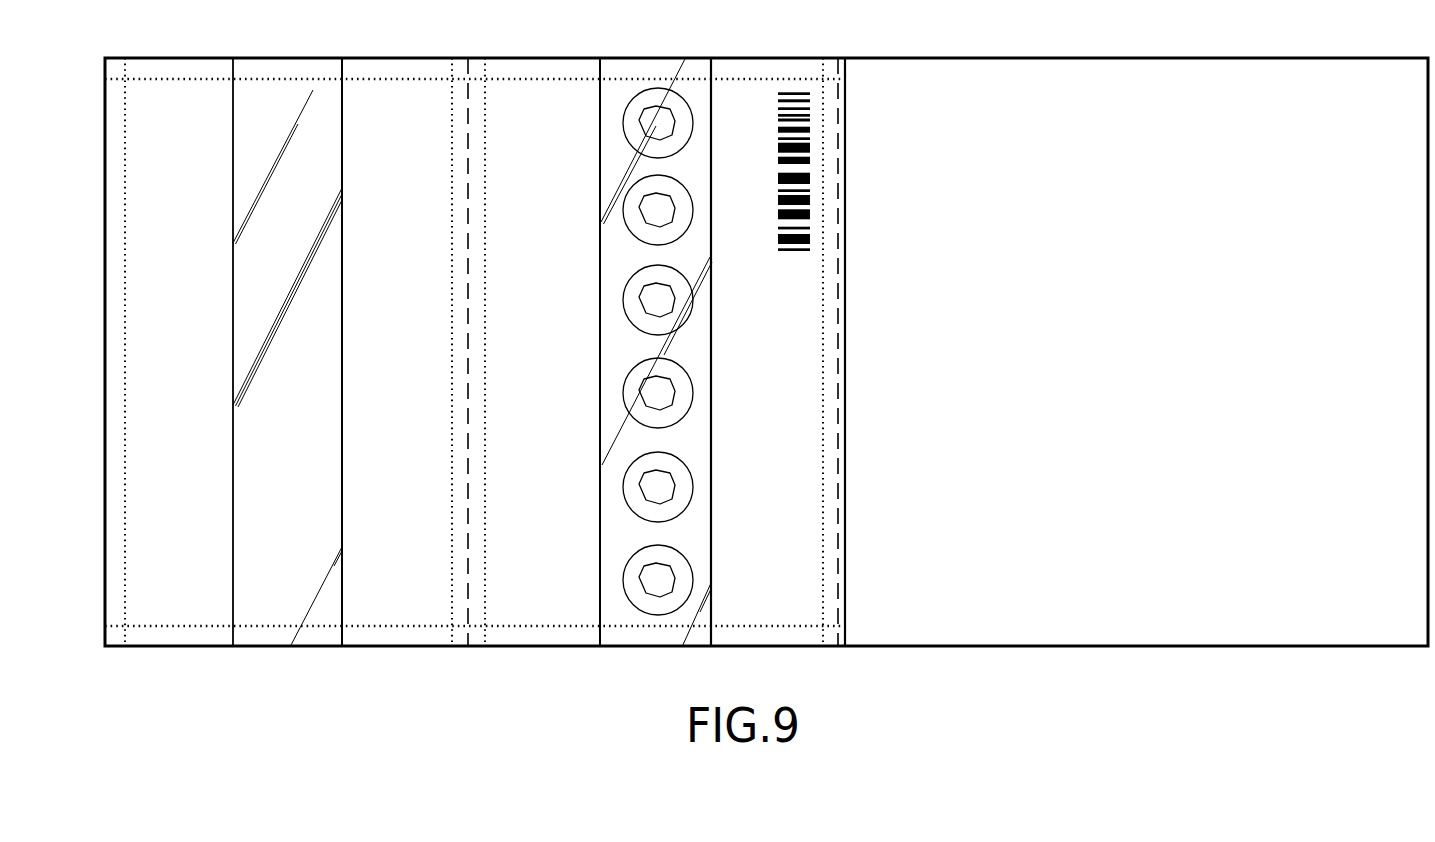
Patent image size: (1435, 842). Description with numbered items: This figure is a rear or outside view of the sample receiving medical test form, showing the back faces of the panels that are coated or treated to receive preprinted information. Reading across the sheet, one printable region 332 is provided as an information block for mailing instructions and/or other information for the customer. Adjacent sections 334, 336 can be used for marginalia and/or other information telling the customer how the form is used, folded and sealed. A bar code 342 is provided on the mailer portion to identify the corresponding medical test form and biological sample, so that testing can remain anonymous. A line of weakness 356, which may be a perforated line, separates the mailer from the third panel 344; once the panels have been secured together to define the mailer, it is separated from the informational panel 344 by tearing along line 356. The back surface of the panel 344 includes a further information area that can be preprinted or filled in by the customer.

The printable region 332 is at (175, 619).
The section for marginalia 334 is at (387, 603).
The section for marginalia 336 is at (522, 615).
The bar code 342 is at (790, 262).
The line of weakness 356 is at (838, 464).
The third panel 344 is at (1038, 635).